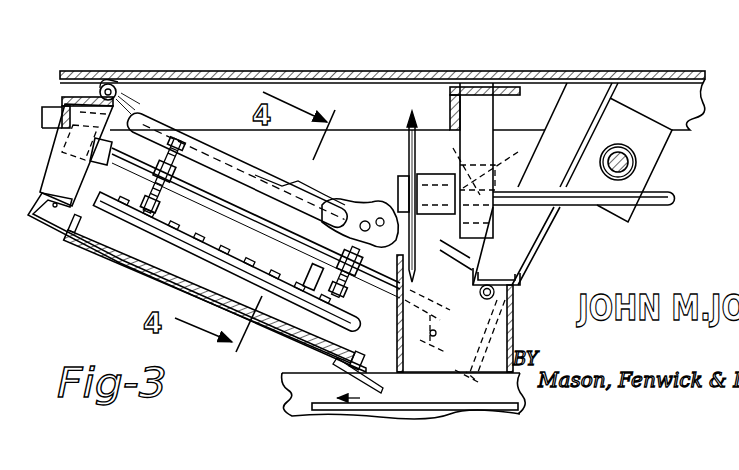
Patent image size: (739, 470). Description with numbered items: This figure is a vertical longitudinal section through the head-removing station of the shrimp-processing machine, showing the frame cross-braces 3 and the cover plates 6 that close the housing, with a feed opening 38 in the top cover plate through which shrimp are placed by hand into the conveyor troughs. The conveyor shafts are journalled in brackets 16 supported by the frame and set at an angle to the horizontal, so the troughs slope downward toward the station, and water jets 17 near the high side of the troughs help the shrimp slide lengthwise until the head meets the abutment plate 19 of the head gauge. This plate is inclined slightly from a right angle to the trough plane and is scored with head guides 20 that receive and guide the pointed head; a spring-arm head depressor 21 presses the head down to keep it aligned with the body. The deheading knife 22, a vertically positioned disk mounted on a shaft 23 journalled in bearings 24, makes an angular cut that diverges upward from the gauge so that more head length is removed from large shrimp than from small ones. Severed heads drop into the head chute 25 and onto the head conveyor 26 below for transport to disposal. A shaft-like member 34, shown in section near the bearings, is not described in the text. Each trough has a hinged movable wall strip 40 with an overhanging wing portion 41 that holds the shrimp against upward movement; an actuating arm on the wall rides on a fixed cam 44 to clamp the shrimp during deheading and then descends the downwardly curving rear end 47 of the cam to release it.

The cross-braces 3 is at (63, 110).
The cover plates 6 is at (630, 73).
The brackets 16 is at (58, 162).
The water jets 17 is at (116, 88).
The abutment plate 19 is at (507, 224).
The head guides 20 is at (510, 263).
The head depressor 21 is at (500, 178).
The deheading knife 22 is at (406, 148).
The shaft 23 is at (673, 193).
The bearings 24 is at (493, 127).
The head chute 25 is at (510, 338).
The head conveyor 26 is at (288, 393).
The shaft 34 is at (634, 163).
The feed opening 38 is at (180, 72).
The strip 40 is at (183, 127).
The overhanging wing portion 41 is at (380, 197).
The fixed cam 44 is at (320, 231).
The downwardly curving rear end 47 is at (335, 197).